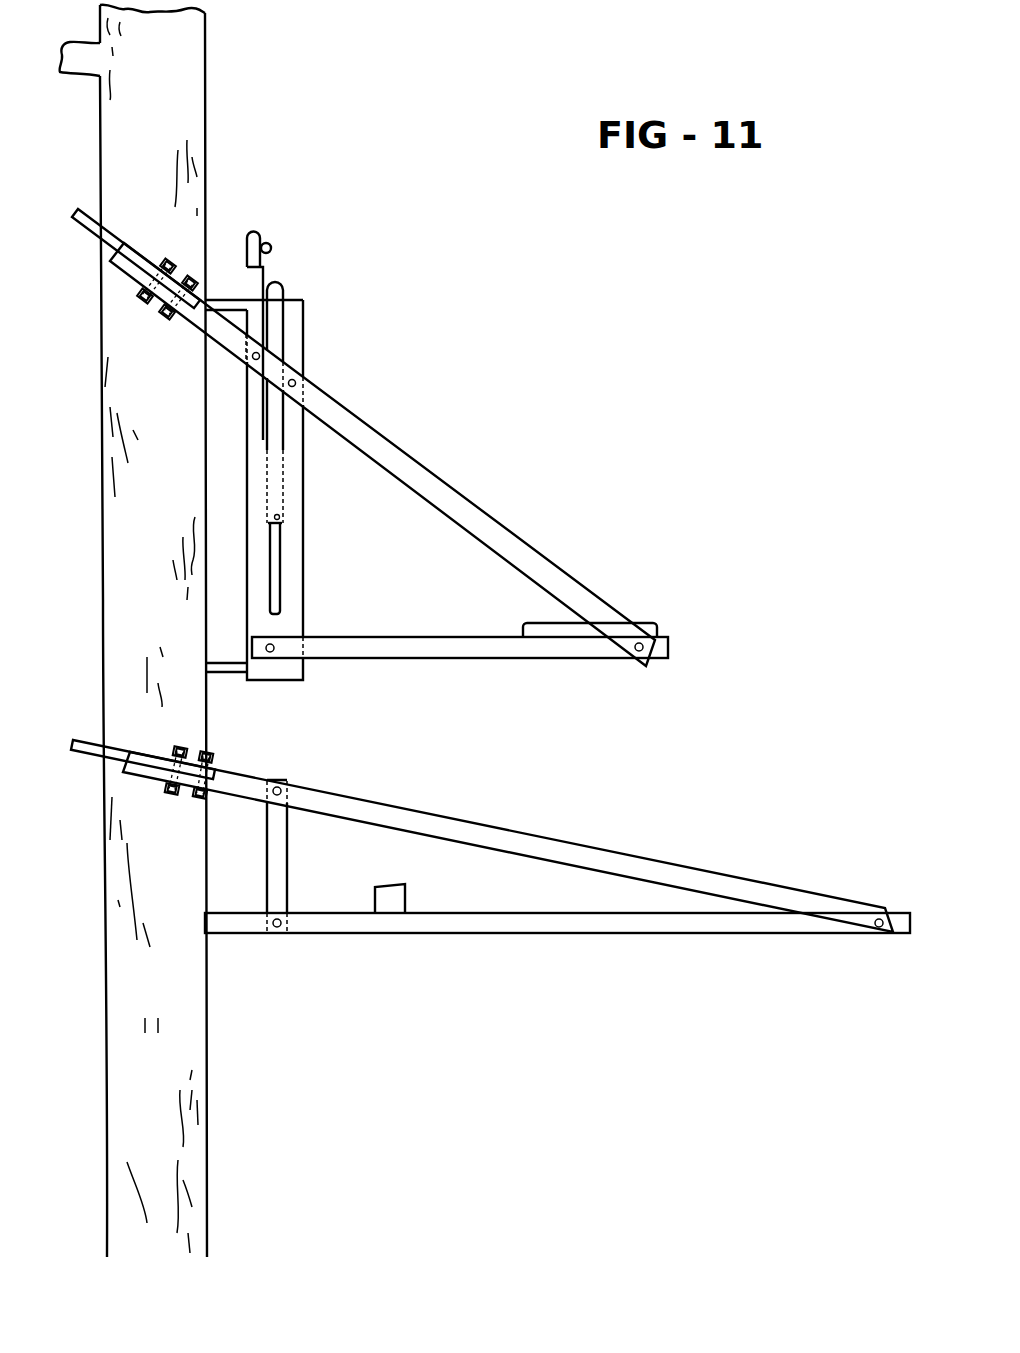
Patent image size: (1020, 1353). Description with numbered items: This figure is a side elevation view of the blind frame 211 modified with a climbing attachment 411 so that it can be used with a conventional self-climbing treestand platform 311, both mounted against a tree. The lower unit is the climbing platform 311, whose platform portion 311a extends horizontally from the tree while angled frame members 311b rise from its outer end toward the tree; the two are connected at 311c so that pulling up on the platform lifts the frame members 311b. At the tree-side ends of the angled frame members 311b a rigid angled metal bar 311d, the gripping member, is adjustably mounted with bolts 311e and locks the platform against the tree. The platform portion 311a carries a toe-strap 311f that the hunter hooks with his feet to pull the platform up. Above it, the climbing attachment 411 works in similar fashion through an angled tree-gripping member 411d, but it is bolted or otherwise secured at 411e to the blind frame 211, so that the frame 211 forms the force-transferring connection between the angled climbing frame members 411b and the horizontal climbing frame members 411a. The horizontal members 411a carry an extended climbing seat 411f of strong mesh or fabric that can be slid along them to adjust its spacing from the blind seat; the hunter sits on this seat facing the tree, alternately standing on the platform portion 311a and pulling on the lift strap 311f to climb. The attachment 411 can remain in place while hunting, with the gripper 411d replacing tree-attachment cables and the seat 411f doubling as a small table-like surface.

The blind frame 211 is at (293, 327).
The climbing treestand platform 311 is at (345, 951).
The platform portion 311a is at (547, 923).
The angled frame members 311b is at (555, 848).
The connection 311c is at (277, 863).
The angled gripping bar 311d is at (100, 738).
The bolts 311e is at (193, 800).
The toe-strap 311f is at (390, 893).
The climbing attachment 411 is at (412, 367).
The horizontal climbing frame members 411a is at (402, 648).
The angled climbing frame members 411b is at (425, 477).
The angled tree-gripping member 411d is at (80, 220).
The bolted connection 411e is at (193, 280).
The climbing seat 411f is at (643, 622).